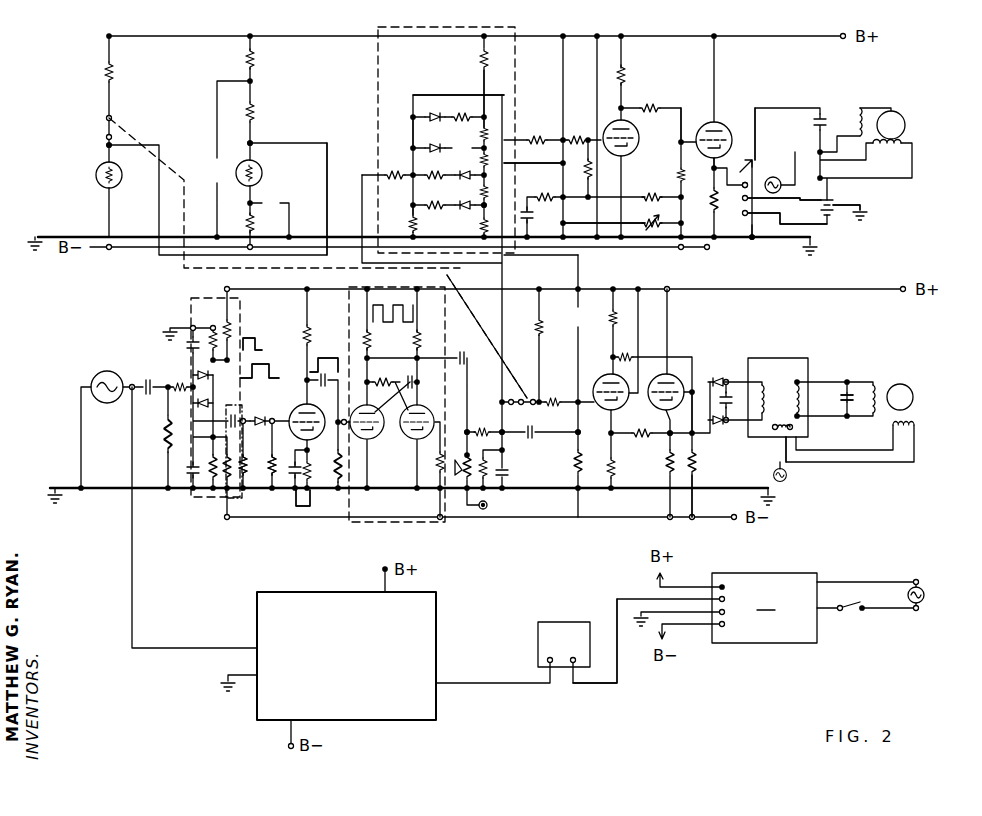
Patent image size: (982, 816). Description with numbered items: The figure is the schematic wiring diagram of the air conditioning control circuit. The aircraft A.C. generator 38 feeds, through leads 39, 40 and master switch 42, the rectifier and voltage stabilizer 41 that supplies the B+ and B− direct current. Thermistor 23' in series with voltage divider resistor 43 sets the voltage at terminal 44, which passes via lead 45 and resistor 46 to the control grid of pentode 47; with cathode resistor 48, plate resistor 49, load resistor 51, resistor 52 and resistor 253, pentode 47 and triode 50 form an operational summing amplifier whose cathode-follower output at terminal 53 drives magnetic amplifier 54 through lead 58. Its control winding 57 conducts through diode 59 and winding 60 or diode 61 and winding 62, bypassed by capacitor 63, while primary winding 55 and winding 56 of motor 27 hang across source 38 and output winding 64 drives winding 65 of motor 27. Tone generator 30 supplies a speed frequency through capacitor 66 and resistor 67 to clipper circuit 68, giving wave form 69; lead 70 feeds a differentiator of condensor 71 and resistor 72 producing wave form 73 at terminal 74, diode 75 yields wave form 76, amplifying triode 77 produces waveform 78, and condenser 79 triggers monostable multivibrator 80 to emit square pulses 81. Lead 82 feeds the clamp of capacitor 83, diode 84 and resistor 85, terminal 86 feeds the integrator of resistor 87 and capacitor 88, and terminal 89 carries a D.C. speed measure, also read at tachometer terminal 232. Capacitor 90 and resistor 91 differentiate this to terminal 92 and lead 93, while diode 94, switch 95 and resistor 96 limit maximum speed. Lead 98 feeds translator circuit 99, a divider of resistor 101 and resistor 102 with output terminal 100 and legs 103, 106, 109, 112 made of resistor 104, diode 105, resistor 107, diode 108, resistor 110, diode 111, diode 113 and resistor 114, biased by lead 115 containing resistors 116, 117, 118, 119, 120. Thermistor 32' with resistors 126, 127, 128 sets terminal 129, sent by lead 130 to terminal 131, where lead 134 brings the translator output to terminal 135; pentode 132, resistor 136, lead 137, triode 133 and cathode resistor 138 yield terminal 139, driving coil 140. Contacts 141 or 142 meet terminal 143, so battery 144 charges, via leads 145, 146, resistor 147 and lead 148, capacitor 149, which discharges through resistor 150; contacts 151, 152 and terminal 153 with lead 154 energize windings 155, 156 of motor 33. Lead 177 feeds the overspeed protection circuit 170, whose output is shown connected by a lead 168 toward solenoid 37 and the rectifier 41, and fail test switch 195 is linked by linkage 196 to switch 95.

The thermistor 23' is at (86, 176).
The motor 27 is at (908, 388).
The tone generator 30 is at (94, 378).
The thermistor 32' is at (267, 170).
The motor 33 is at (898, 118).
The solenoid 37 is at (560, 628).
The A.C. generator 38 is at (775, 177).
The lead 39 is at (863, 580).
The lead 40 is at (890, 611).
The rectifier and voltage stabilizer 41 is at (764, 608).
The master switch 42 is at (850, 613).
The voltage divider resistor 43 is at (105, 72).
The terminal 44 is at (104, 146).
The lead 45 is at (159, 213).
The resistor 46 is at (541, 320).
The pentode 47 is at (603, 378).
The cathode resistor 48 is at (609, 474).
The plate resistor 49 is at (618, 316).
The triode 50 is at (670, 374).
The load resistor 51 is at (624, 353).
The resistor 52 is at (697, 465).
The terminal 53 is at (668, 432).
The magnetic amplifier 54 is at (792, 380).
The primary winding 55 is at (800, 428).
The winding 56 is at (912, 440).
The control winding 57 is at (730, 380).
The lead 58 is at (699, 454).
The diode 59 is at (718, 378).
The winding 60 is at (763, 380).
The diode 61 is at (720, 426).
The winding 62 is at (770, 458).
The capacitor 63 is at (700, 412).
The output winding 64 is at (802, 390).
The winding 65 is at (849, 385).
The capacitor 66 is at (148, 396).
The resistor 67 is at (178, 382).
The clipper circuit 68 is at (240, 306).
The wave form 69 is at (258, 337).
The lead 70 is at (192, 450).
The condensor 71 is at (237, 415).
The resistor 72 is at (258, 486).
The wave form 73 is at (250, 366).
The terminal 74 is at (244, 430).
The diode 75 is at (262, 415).
The wave form 76 is at (298, 511).
The amplifying triode 77 is at (296, 405).
The waveform 78 is at (322, 357).
The condenser 79 is at (333, 387).
The monostable multivibrator 80 is at (446, 336).
The square pulse 81 is at (404, 303).
The lead 82 is at (403, 355).
The capacitor 83 is at (464, 360).
The diode 84 is at (437, 468).
The resistor 85 is at (467, 433).
The terminal 86 is at (464, 428).
The resistor 87 is at (482, 428).
The capacitor 88 is at (507, 472).
The terminal 89 is at (503, 430).
The capacitor 90 is at (533, 432).
The resistor 91 is at (643, 437).
The terminal 92 is at (581, 462).
The lead 93 is at (576, 434).
The diode 94 is at (511, 400).
The switch 95 is at (530, 398).
The resistor 96 is at (554, 396).
The lead 98 is at (504, 276).
The condensing temperature-compressor speed translator circuit 99 is at (378, 68).
The terminal 100 is at (413, 176).
The resistor 101 is at (385, 172).
The resistor 102 is at (411, 227).
The leg 103 is at (483, 218).
The resistor 104 is at (436, 211).
The diode 105 is at (465, 200).
The leg 106 is at (437, 185).
The resistor 107 is at (436, 170).
The diode 108 is at (468, 163).
The leg 109 is at (434, 143).
The resistor 110 is at (487, 144).
The diode 111 is at (412, 142).
The leg 112 is at (460, 114).
The diode 113 is at (432, 113).
The resistor 114 is at (483, 133).
The lead 115 is at (486, 107).
The resistor 116 is at (486, 207).
The resistor 117 is at (487, 188).
The resistor 118 is at (507, 157).
The resistor 119 is at (487, 129).
The resistor 120 is at (486, 66).
The voltage divider resistor 126 is at (252, 225).
The voltage divider resistor 127 is at (252, 108).
The voltage divider resistor 128 is at (252, 58).
The terminal 129 is at (252, 144).
The lead 130 is at (328, 215).
The terminal 131 is at (588, 165).
The pentode 132 is at (641, 138).
The triode 133 is at (722, 119).
The lead 134 is at (434, 93).
The terminal 135 is at (566, 137).
The resistor 136 is at (645, 106).
The lead 137 is at (681, 104).
The cathode resistor 138 is at (678, 184).
The terminal 139 is at (705, 167).
The coil 140 is at (716, 198).
The contact 141 is at (762, 200).
The contact 142 is at (753, 227).
The terminal 143 is at (766, 216).
The battery 144 is at (833, 222).
The lead 145 is at (834, 203).
The lead 146 is at (740, 244).
The resistor 147 is at (653, 222).
The lead 148 is at (600, 223).
The capacitor 149 is at (530, 222).
The resistor 150 is at (555, 197).
The contact 151 is at (746, 168).
The contact 152 is at (745, 180).
The terminal 153 is at (756, 158).
The lead 154 is at (816, 124).
The winding 155 is at (859, 110).
The winding 156 is at (896, 148).
The conductor 168 is at (615, 661).
The overspeed protection circuit 170 is at (360, 713).
The lead 177 is at (130, 471).
The fail test switch 195 is at (113, 121).
The linkage 196 is at (170, 173).
The tachometer terminal 232 is at (490, 506).
The resistor 253 is at (668, 489).